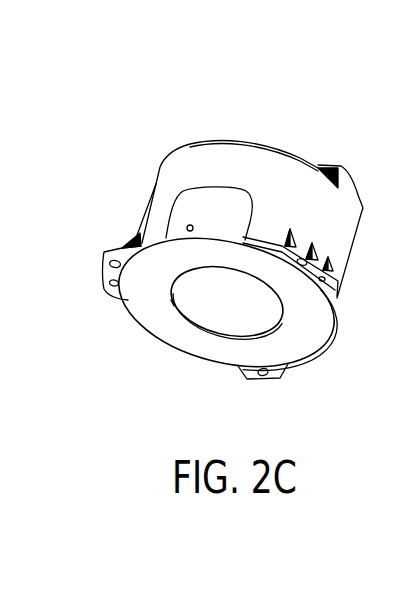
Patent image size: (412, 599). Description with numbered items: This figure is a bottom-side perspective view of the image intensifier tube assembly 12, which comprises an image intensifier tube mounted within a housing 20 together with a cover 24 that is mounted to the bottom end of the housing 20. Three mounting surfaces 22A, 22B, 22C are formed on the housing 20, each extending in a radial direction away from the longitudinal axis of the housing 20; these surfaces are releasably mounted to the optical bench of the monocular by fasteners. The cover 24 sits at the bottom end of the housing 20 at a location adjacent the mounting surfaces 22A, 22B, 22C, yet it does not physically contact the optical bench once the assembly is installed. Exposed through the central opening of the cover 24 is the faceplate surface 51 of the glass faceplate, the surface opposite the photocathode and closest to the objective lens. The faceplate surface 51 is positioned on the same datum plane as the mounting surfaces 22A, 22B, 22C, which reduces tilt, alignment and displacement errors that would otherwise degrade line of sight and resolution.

The image intensifier tube assembly 12 is at (148, 113).
The housing 20 is at (266, 160).
The mounting surface 22A is at (103, 268).
The mounting surface 22B is at (328, 252).
The mounting surface 22C is at (288, 367).
The cover 24 is at (174, 332).
The faceplate surface 51 is at (222, 314).